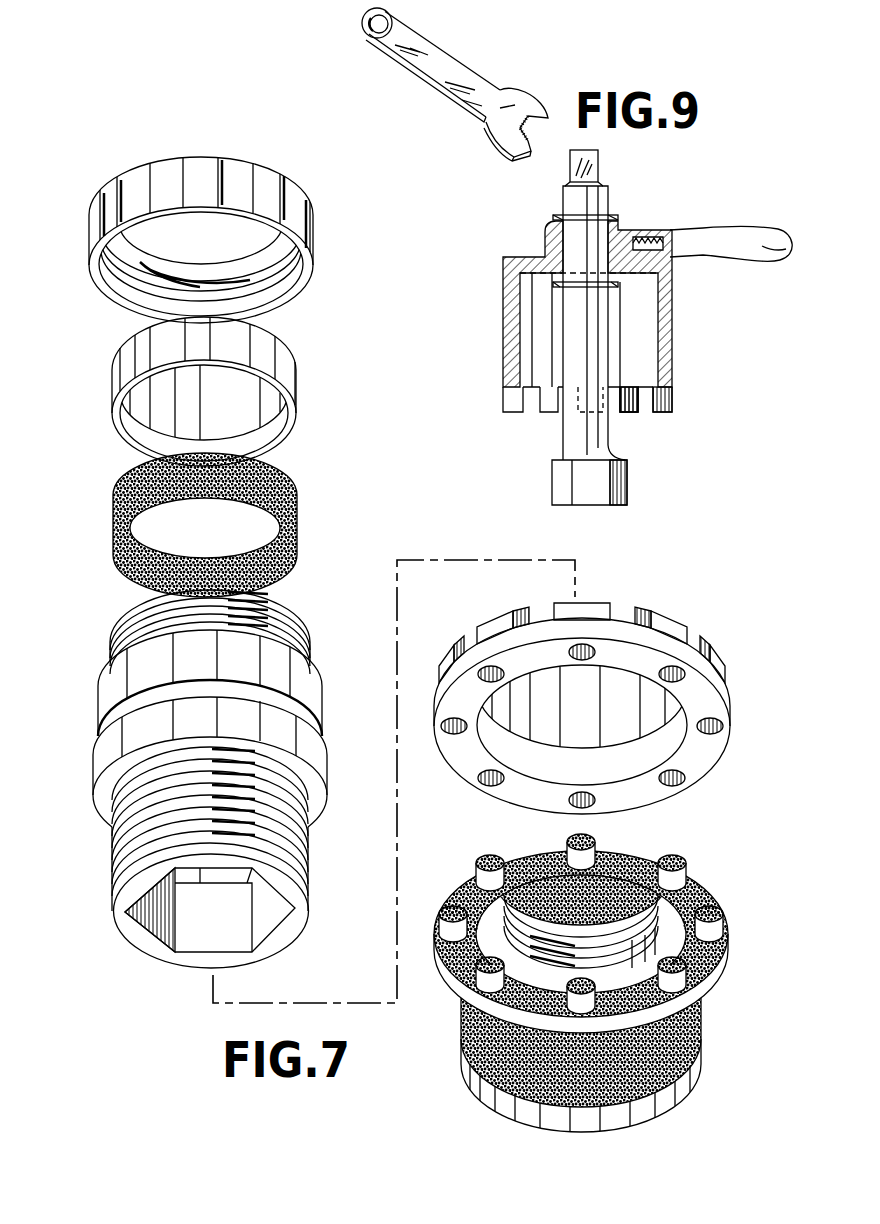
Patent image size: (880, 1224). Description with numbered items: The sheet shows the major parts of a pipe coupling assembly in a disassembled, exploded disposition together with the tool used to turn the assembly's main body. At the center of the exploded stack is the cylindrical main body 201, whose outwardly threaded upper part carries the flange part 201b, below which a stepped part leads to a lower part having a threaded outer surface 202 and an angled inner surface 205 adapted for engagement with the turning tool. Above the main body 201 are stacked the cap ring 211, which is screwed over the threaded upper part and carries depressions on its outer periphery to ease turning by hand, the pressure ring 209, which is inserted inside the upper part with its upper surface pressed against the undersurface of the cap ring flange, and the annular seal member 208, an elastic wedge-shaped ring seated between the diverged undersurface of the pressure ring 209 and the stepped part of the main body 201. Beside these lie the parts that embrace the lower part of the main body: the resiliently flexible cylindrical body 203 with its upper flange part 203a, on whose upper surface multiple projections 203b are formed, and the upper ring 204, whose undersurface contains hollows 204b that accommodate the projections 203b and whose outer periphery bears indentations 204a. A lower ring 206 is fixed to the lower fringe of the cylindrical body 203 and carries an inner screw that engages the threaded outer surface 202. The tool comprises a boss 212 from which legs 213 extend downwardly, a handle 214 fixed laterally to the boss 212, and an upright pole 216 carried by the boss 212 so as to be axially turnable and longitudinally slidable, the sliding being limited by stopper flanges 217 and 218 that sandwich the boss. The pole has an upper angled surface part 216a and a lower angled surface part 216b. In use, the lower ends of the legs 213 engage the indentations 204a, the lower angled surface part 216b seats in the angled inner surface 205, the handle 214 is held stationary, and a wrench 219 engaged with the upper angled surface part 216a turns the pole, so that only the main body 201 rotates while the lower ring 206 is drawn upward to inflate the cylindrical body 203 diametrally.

In FIG. 7, the cylindrical main body 201 is at (200, 802).
In FIG. 7, the flange part 201b is at (104, 697).
In FIG. 7, the threaded outer surface 202 is at (113, 812).
In FIG. 7, the cylindrical body 203 is at (610, 974).
In FIG. 7, the upper flange part 203a is at (707, 897).
In FIG. 7, the projections 203b is at (675, 862).
In FIG. 7, the upper ring 204 is at (617, 688).
In FIG. 7, the indentations 204a is at (624, 617).
In FIG. 9, the indentations 204a is at (647, 404).
In FIG. 7, the hollows 204b is at (713, 732).
In FIG. 7, the angled inner surface 205 is at (186, 946).
In FIG. 7, the lower ring 206 is at (555, 952).
In FIG. 7, the annular seal member 208 is at (300, 482).
In FIG. 7, the pressure ring 209 is at (300, 348).
In FIG. 7, the cap ring 211 is at (311, 203).
In FIG. 9, the boss 212 is at (580, 338).
In FIG. 9, the legs 213 is at (505, 350).
In FIG. 9, the handle 214 is at (738, 257).
In FIG. 9, the upright pole 216 is at (582, 324).
In FIG. 9, the upper angled surface part 216a is at (598, 162).
In FIG. 9, the lower angled surface part 216b is at (562, 478).
In FIG. 9, the stopper flange 217 is at (553, 218).
In FIG. 9, the stopper flange 218 is at (618, 286).
In FIG. 9, the wrench 219 is at (445, 80).